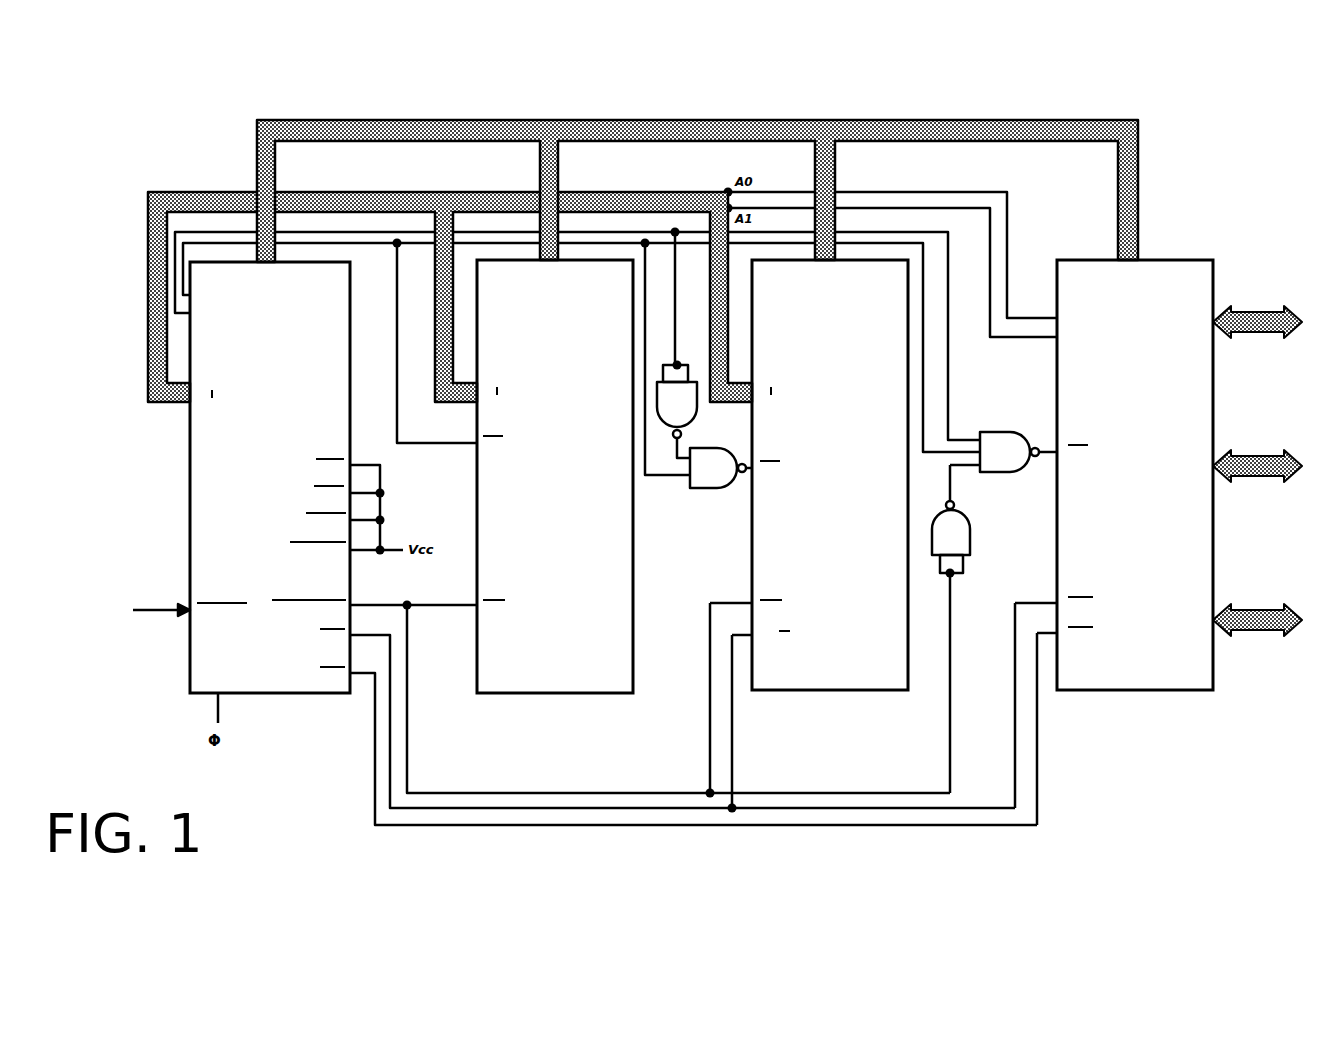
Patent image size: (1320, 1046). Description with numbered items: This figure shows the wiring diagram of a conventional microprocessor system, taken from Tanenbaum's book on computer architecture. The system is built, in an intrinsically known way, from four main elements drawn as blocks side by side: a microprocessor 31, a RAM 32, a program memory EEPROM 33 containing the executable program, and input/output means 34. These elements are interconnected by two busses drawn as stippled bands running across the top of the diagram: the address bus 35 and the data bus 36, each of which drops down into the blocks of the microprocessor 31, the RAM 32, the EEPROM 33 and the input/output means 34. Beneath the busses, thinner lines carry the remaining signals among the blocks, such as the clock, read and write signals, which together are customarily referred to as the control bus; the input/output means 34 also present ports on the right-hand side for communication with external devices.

The microprocessor 31 is at (202, 470).
The RAM 32 is at (758, 554).
The program memory EEPROM 33 is at (478, 491).
The input/output means 34 is at (1060, 556).
The address bus 35 is at (520, 193).
The data bus 36 is at (556, 130).